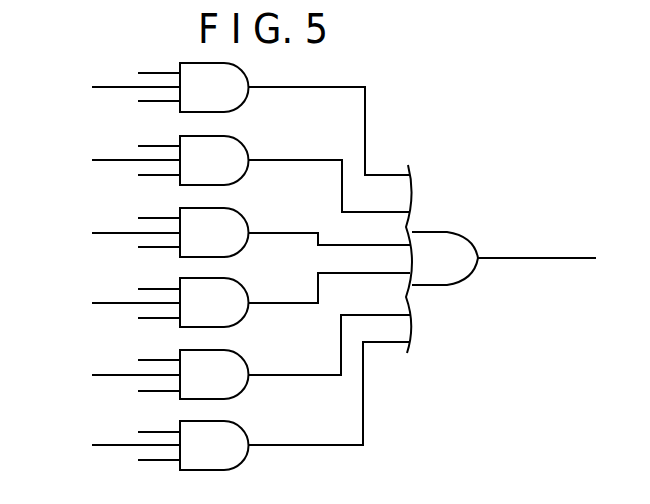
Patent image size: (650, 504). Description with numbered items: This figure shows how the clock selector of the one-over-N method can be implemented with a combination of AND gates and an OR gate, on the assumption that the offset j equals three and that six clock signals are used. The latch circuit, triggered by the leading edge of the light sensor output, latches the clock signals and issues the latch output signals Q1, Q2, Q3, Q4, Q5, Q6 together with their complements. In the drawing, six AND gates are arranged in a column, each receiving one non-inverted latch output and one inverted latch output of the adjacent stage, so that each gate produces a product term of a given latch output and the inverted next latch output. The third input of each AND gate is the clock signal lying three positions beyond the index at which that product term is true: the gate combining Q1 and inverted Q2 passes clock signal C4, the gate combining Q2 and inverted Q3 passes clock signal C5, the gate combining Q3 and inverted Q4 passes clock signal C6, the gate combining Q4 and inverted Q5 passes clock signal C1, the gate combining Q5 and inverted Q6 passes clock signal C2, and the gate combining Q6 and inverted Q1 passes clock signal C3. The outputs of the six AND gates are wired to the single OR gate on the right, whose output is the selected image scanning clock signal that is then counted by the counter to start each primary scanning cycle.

The clock signal C1 is at (238, 300).
The clock signal C2 is at (238, 357).
The clock signal C3 is at (238, 406).
The clock signal C4 is at (238, 119).
The clock signal C5 is at (238, 174).
The clock signal C6 is at (238, 232).
The latch output signal Q1 is at (129, 451).
The latch output signal Q2 is at (129, 92).
The latch output signal Q3 is at (129, 166).
The latch output signal Q4 is at (129, 238).
The latch output signal Q5 is at (129, 309).
The latch output signal Q6 is at (129, 382).